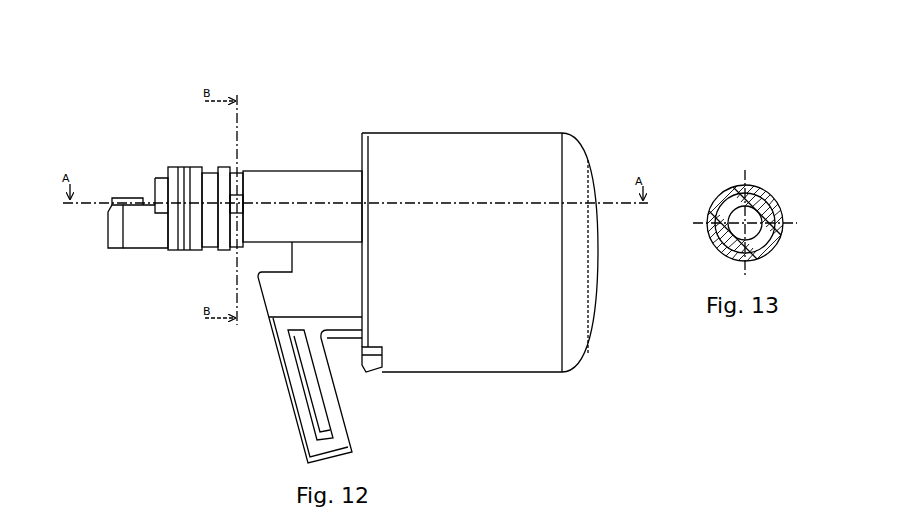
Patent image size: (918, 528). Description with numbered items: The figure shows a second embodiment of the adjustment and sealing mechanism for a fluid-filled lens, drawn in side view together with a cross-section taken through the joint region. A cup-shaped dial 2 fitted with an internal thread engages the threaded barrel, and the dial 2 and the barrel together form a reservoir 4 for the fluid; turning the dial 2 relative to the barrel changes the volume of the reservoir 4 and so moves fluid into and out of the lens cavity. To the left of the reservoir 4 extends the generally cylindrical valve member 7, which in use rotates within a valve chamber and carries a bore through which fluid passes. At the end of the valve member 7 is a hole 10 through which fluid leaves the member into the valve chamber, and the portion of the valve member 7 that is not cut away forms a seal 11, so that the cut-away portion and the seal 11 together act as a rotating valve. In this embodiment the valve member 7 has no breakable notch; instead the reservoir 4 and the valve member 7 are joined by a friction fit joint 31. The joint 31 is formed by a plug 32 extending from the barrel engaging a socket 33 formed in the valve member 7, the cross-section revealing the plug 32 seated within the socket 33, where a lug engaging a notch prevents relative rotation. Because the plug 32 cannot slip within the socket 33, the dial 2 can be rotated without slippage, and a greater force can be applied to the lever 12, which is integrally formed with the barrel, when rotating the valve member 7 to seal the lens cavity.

In FIG. 12, the dial 2 is at (532, 147).
In FIG. 12, the reservoir 4 is at (363, 101).
In FIG. 12, the valve member 7 is at (123, 238).
In FIG. 12, the hole 10 is at (142, 197).
In FIG. 12, the seal 11 is at (110, 230).
In FIG. 12, the lever 12 is at (292, 385).
In FIG. 12, the friction fit joint 31 is at (225, 163).
In FIG. 13, the plug 32 is at (762, 238).
In FIG. 13, the socket 33 is at (765, 197).